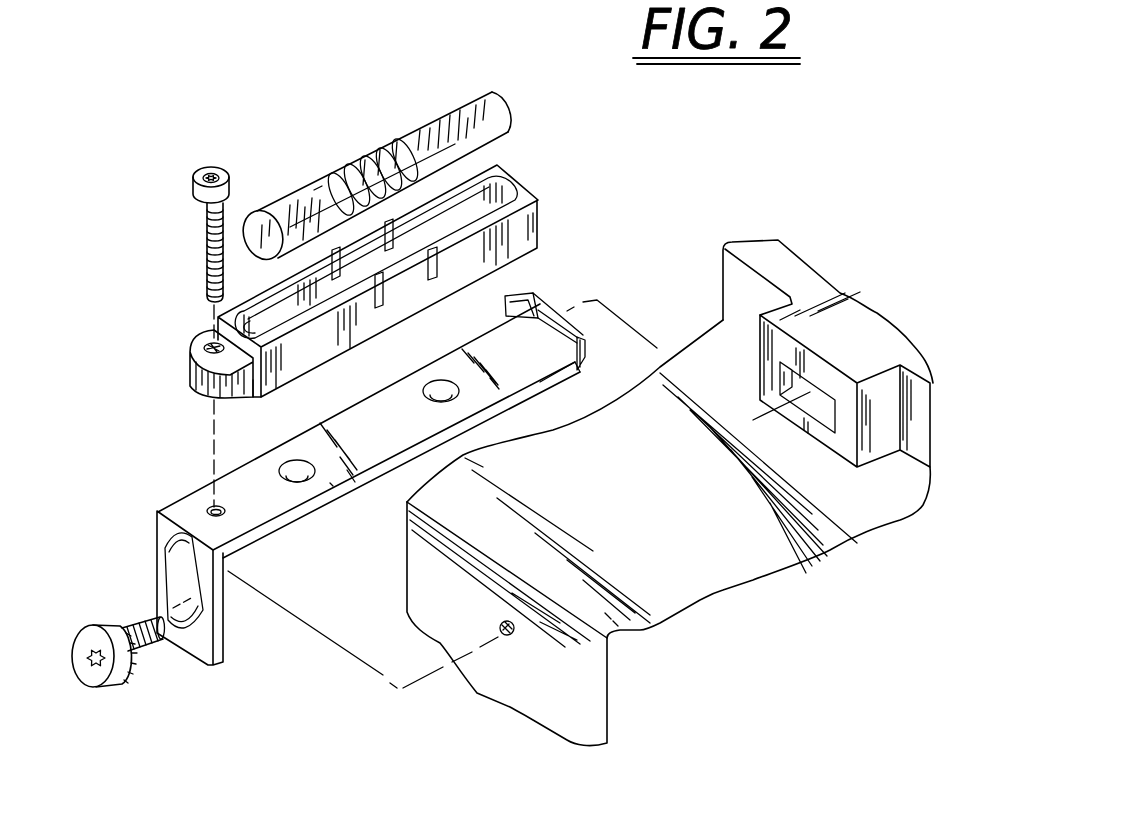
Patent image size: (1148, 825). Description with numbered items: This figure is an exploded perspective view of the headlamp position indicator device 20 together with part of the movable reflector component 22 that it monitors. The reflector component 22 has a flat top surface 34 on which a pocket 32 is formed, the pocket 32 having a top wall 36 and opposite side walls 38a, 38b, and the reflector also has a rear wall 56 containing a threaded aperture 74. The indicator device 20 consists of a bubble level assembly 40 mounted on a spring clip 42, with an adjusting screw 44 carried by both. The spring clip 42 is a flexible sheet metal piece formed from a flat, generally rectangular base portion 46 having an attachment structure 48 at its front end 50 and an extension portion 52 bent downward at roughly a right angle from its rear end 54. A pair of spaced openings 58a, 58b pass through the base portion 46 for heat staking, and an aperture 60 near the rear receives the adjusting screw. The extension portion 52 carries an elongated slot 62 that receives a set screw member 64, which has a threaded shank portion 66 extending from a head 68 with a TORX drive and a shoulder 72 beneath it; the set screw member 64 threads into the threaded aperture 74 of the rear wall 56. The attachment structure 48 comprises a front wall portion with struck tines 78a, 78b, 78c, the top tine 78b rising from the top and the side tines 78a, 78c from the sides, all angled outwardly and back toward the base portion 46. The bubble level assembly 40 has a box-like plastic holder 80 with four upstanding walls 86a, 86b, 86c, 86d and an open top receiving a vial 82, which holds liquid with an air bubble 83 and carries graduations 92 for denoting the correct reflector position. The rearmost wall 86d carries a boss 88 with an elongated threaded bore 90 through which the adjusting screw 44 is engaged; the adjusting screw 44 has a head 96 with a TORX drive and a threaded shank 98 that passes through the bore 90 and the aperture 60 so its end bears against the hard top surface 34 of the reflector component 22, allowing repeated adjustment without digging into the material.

The headlamp position indicator device 20 is at (152, 371).
The movable reflector component 22 is at (713, 572).
The pocket 32 is at (803, 278).
The reflector component flat top surface 34 is at (630, 515).
The top wall 36 is at (860, 345).
The side wall 38a is at (847, 427).
The side wall 38b is at (767, 369).
The bubble level assembly 40 is at (571, 224).
The spring clip 42 is at (624, 286).
The adjusting screw 44 is at (207, 240).
The base portion 46 is at (381, 412).
The attachment structure 48 is at (595, 321).
The front end 50 is at (565, 345).
The extension portion 52 is at (202, 660).
The rear end 54 is at (228, 547).
The rear wall 56 is at (434, 617).
The spaced opening 58a is at (300, 482).
The spaced opening 58b is at (434, 386).
The aperture 60 is at (213, 509).
The elongated slot 62 is at (190, 580).
The set screw member 64 is at (150, 658).
The threaded shank portion 66 is at (148, 622).
The head 68 is at (108, 677).
The shoulder 72 is at (112, 623).
The threaded aperture 74 is at (508, 636).
The side tine 78a is at (586, 356).
The top tine 78b is at (545, 316).
The side tine 78c is at (524, 312).
The plastic holder 80 is at (519, 186).
The vial 82 is at (477, 103).
The air bubble 83 is at (329, 176).
The wall 86a is at (310, 347).
The forwardmost wall 86b is at (543, 215).
The wall 86c is at (478, 194).
The rearmost wall 86d is at (255, 390).
The boss 88 is at (203, 374).
The threaded bore 90 is at (203, 337).
The graduations 92 is at (407, 143).
The head 96 is at (231, 184).
The threaded shank 98 is at (207, 277).